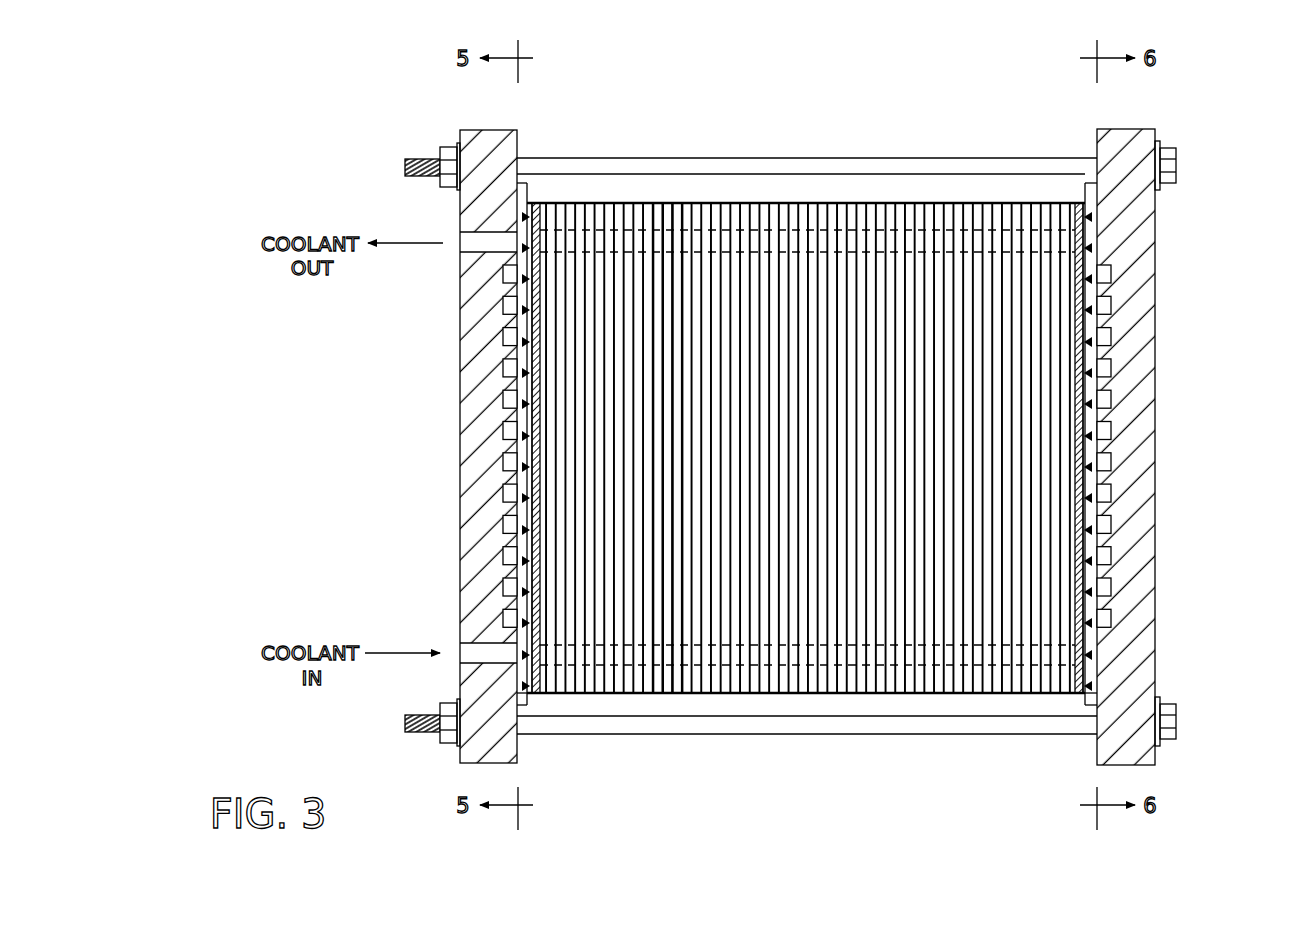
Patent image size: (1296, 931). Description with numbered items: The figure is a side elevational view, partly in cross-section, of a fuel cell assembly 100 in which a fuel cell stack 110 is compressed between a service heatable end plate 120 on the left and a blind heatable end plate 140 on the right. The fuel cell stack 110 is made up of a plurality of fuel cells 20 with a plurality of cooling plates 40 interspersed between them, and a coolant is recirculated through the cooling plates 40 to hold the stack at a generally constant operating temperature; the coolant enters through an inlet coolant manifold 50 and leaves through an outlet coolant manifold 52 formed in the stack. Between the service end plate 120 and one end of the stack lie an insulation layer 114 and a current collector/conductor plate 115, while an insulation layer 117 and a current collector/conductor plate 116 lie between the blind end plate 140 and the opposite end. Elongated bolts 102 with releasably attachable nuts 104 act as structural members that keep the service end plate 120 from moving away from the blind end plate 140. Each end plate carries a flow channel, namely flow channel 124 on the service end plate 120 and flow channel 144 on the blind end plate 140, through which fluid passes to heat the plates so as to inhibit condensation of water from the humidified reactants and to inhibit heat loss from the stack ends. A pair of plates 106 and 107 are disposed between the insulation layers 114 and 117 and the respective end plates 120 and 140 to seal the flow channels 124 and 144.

The fuel cell assembly 100 is at (870, 126).
The elongated bolts 102 is at (790, 165).
The releasably attachable nuts 104 is at (453, 162).
The plate 106 is at (528, 705).
The plate 107 is at (1088, 712).
The fuel cell stack 110 is at (754, 702).
The insulation layer 114 is at (533, 206).
The current collector/conductor plate 115 is at (538, 212).
The current collector/conductor plate 116 is at (1079, 205).
The insulation layer 117 is at (1087, 203).
The service heatable end plate 120 is at (458, 404).
The flow channel 124 is at (500, 489).
The blind heatable end plate 140 is at (1160, 404).
The flow channel 144 is at (1114, 489).
The fuel cells 20 is at (681, 692).
The cooling plates 40 is at (634, 207).
The inlet coolant manifold 50 is at (950, 678).
The outlet coolant manifold 52 is at (933, 205).